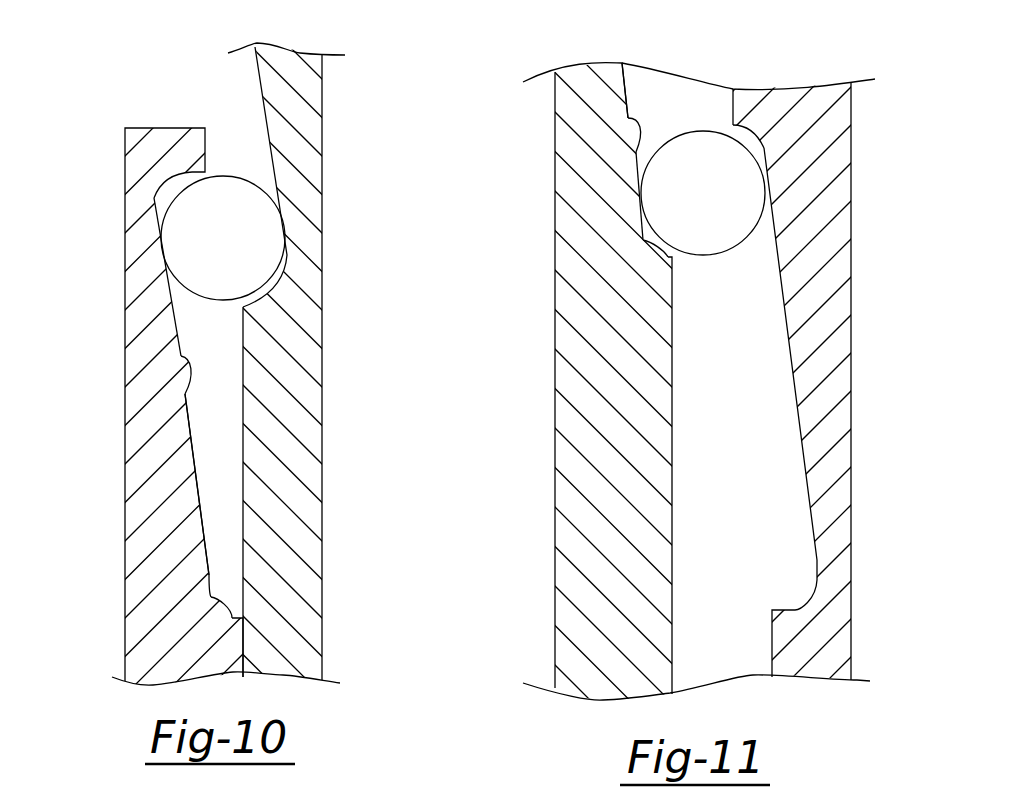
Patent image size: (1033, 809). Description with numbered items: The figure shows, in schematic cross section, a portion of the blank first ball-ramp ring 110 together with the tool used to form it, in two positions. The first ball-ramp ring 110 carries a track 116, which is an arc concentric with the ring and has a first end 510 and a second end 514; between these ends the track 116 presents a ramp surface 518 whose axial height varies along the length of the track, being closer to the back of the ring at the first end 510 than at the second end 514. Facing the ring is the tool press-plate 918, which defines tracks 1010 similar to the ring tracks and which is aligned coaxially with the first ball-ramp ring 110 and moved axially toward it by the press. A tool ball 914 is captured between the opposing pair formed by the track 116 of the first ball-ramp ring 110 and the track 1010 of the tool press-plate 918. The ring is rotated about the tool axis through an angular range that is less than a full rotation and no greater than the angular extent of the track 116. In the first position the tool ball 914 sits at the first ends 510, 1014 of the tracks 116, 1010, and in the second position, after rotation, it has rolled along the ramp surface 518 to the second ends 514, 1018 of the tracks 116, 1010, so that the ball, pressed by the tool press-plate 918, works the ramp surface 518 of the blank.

In FIG. 10, the first ball-ramp ring 110 is at (160, 443).
In FIG. 11, the first ball-ramp ring 110 is at (610, 355).
In FIG. 10, the track 116 is at (200, 428).
In FIG. 11, the track 116 is at (640, 91).
In FIG. 10, the first end 510 is at (180, 180).
In FIG. 10, the second end 514 is at (210, 597).
In FIG. 11, the second end 514 is at (640, 242).
In FIG. 10, the ramp surface 518 is at (182, 358).
In FIG. 11, the ramp surface 518 is at (633, 120).
In FIG. 10, the tool ball 914 is at (192, 225).
In FIG. 11, the tool ball 914 is at (702, 192).
In FIG. 10, the tool press-plate 918 is at (300, 185).
In FIG. 11, the tool press-plate 918 is at (813, 333).
In FIG. 10, the track 1010 is at (252, 154).
In FIG. 11, the track 1010 is at (783, 495).
In FIG. 10, the first end 1014 is at (257, 303).
In FIG. 11, the first end 1014 is at (778, 610).
In FIG. 11, the second end 1018 is at (760, 143).